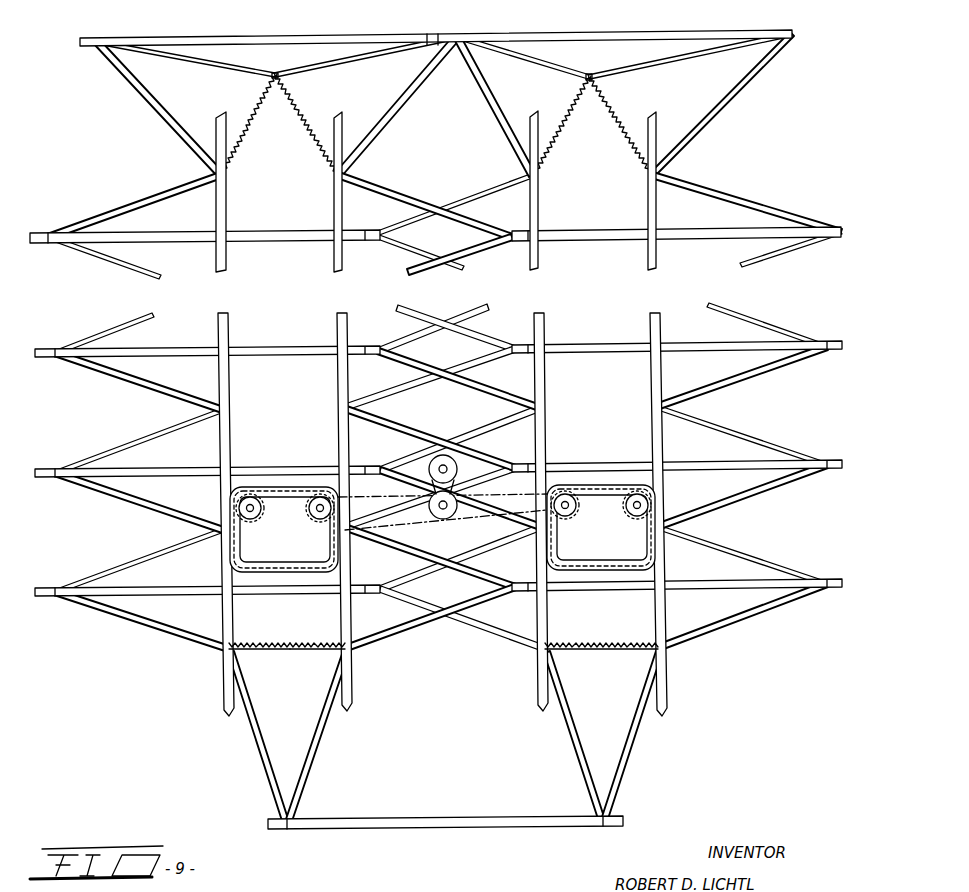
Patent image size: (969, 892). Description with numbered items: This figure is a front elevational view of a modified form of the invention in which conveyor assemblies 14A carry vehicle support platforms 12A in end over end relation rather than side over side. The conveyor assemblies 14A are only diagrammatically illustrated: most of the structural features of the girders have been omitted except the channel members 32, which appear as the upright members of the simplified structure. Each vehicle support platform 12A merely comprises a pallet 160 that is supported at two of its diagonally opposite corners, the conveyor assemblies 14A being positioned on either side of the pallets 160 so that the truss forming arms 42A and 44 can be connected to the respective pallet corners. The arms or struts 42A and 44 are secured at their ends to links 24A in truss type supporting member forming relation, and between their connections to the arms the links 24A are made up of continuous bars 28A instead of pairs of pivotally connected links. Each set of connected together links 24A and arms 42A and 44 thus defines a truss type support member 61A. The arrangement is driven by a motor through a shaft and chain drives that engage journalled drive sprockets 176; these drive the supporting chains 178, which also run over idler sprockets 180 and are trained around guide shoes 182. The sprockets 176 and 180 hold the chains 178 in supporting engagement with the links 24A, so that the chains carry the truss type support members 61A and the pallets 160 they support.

The vehicle support platform 12A is at (297, 234).
The conveyor assembly 14A is at (207, 161).
The channel member 32 is at (226, 193).
The pallet 160 is at (235, 237).
The truss forming arm 42A is at (183, 387).
The truss forming arm 44 is at (133, 440).
The truss type support member 61A is at (393, 636).
The link 24A is at (263, 646).
The continuous bar 28A is at (315, 633).
The drive sprocket 176 is at (333, 487).
The supporting chain 178 is at (600, 485).
The idler sprocket 180 is at (242, 487).
The guide shoe 182 is at (605, 553).